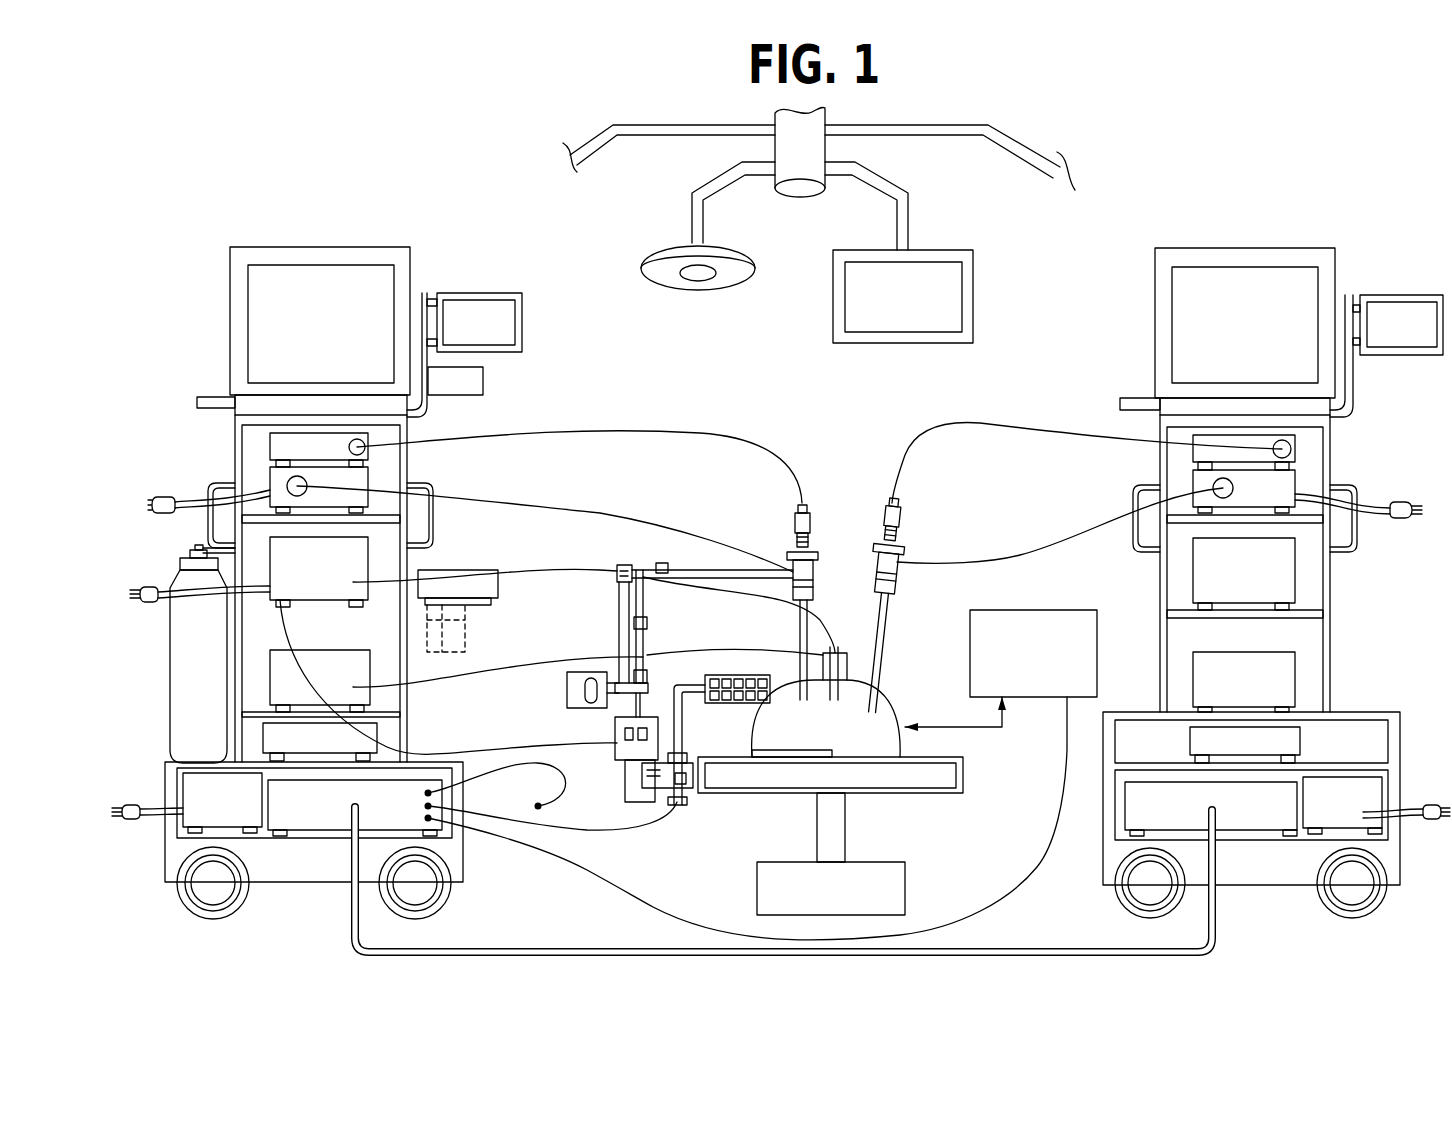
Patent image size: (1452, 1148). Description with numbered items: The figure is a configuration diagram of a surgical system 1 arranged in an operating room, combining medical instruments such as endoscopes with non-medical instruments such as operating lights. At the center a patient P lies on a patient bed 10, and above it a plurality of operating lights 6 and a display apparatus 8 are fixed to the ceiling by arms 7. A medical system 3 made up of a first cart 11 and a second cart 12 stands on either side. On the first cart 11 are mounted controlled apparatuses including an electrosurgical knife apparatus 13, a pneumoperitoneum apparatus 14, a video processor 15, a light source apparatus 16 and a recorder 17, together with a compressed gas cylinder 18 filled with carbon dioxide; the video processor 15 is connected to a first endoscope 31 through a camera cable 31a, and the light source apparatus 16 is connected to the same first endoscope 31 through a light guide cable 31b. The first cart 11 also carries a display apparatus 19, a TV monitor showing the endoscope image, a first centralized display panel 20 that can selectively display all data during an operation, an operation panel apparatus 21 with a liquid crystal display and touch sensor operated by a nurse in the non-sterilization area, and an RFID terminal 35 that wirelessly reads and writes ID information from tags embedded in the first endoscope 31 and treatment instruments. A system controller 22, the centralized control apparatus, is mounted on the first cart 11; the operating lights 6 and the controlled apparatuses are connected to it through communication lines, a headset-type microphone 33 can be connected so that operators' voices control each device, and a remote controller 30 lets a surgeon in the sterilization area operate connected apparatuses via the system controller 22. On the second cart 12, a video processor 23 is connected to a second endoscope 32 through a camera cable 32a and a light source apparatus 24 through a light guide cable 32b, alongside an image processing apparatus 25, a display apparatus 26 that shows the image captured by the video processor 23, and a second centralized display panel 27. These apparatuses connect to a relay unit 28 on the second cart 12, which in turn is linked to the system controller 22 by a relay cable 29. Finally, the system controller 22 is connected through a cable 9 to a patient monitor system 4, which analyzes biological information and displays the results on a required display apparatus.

The surgical system 1 is at (351, 151).
The medical system 3 is at (241, 219).
The patient monitor system 4 is at (1030, 697).
The operating light 6 is at (753, 277).
The arm 7 is at (702, 180).
The display apparatus 8 is at (973, 293).
The cable 9 is at (553, 860).
The patient bed 10 is at (912, 795).
The first cart 11 is at (258, 882).
The second cart 12 is at (1297, 885).
The electrosurgical knife apparatus 13 is at (282, 560).
The pneumoperitoneum apparatus 14 is at (270, 677).
The video processor 15 is at (270, 447).
The light source apparatus 16 is at (270, 483).
The recorder 17 is at (270, 735).
The compressed gas cylinder 18 is at (178, 630).
The display apparatus 19 is at (318, 275).
The first centralized display panel 20 is at (523, 321).
The operation panel apparatus 21 is at (498, 583).
The system controller 22 is at (313, 830).
The video processor 23 is at (1295, 450).
The light source apparatus 24 is at (1285, 487).
The image processing apparatus 25 is at (1302, 740).
The display apparatus 26 is at (1262, 278).
The second centralized display panel 27 is at (1402, 308).
The relay unit 28 is at (1240, 830).
The relay cable 29 is at (1068, 947).
The remote controller 30 is at (720, 675).
The first endoscope 31 is at (790, 550).
The camera cable 31a is at (590, 437).
The light guide cable 31b is at (598, 511).
The second endoscope 32 is at (903, 548).
The camera cable 32a is at (1020, 427).
The light guide cable 32b is at (995, 558).
The headset-type microphone 33 is at (563, 787).
The RFID terminal 35 is at (485, 380).
The patient P is at (905, 712).